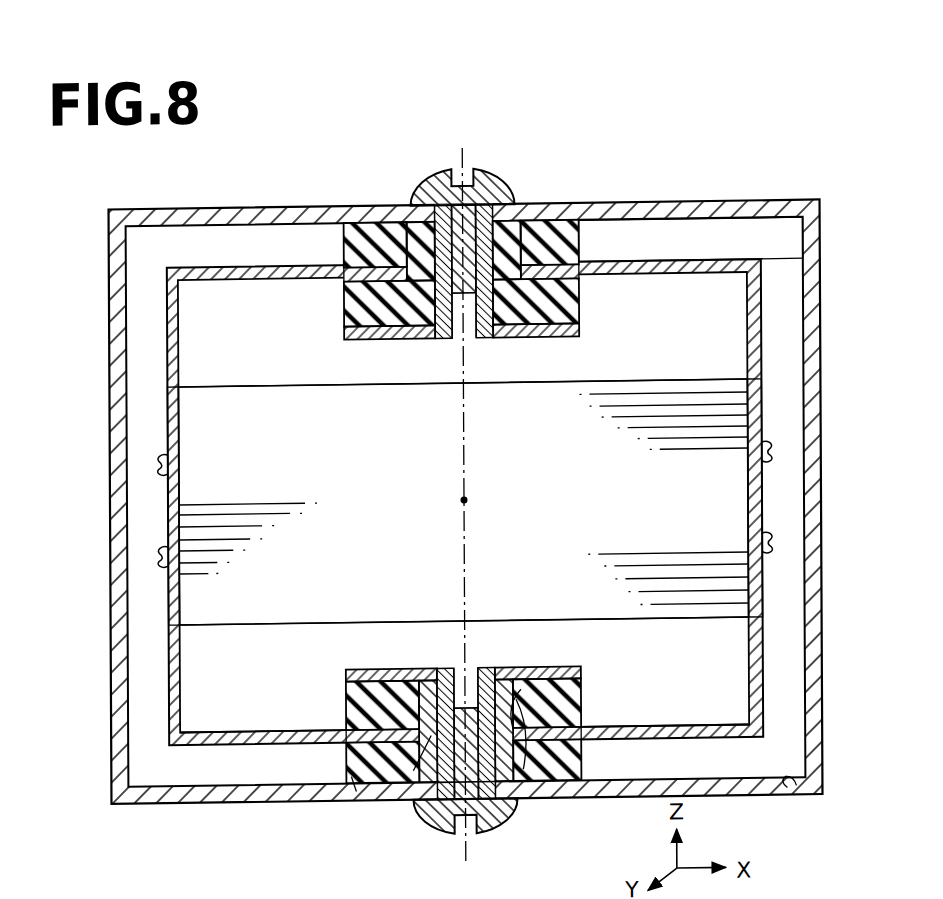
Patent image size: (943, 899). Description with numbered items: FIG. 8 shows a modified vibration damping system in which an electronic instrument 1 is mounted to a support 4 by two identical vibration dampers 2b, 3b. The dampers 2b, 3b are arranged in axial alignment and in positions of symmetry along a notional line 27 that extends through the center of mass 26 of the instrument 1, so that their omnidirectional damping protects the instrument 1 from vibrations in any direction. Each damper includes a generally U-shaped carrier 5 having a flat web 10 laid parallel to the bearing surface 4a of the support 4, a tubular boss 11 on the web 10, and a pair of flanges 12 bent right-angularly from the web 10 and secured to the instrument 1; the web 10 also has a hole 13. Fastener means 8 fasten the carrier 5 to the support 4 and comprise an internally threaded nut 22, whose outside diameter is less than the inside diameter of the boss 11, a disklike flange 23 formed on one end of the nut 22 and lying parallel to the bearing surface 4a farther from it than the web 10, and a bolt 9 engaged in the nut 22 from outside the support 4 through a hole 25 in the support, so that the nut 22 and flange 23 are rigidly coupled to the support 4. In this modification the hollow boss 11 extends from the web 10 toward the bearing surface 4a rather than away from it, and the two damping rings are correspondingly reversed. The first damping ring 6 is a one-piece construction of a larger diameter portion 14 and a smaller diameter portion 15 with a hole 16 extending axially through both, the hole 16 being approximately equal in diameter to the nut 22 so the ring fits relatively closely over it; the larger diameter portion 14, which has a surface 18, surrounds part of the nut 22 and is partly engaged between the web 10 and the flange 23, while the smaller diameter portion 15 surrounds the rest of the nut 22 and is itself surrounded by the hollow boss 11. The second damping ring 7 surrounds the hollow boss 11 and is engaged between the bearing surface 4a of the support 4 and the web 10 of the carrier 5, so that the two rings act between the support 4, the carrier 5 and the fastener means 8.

The electronic instrument 1 is at (622, 376).
The vibration damper 2b is at (318, 716).
The vibration damper 3b is at (600, 240).
The support 4 is at (724, 799).
The bearing surface 4a is at (795, 800).
The carrier 5 is at (222, 280).
The first damping ring 6 is at (345, 306).
The second damping ring 7 is at (345, 243).
The fastener means 8 is at (578, 338).
The bolt 9 is at (500, 192).
The web 10 is at (224, 727).
The tubular boss 11 is at (432, 730).
The flanges 12 is at (170, 602).
The hole 13 is at (522, 670).
The larger diameter portion 14 is at (580, 722).
The smaller diameter portion 15 is at (522, 782).
The hole 16 is at (350, 785).
The surface 18 is at (556, 782).
The nut 22 is at (418, 760).
The flange 23 is at (368, 668).
The hole 25 is at (452, 800).
The center of mass 26 is at (467, 500).
The notional line 27 is at (462, 154).